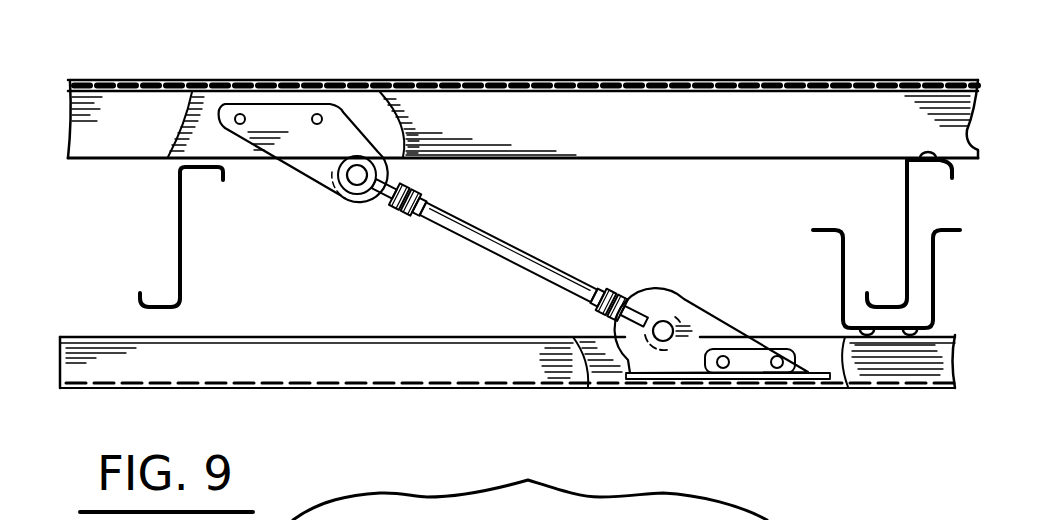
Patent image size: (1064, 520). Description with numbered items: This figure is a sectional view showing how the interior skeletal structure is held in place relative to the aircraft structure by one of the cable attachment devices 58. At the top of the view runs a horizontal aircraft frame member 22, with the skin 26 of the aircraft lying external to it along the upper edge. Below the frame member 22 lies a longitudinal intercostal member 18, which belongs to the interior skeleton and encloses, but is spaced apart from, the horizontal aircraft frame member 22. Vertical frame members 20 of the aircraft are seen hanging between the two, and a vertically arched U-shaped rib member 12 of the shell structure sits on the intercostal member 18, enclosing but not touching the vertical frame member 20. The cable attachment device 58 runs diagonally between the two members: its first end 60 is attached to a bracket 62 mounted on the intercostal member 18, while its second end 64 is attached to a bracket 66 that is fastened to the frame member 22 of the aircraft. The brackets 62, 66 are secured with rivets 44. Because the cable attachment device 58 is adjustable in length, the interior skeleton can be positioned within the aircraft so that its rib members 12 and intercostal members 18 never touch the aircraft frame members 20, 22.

The arched rib member 12 is at (937, 297).
The intercostal member 18 is at (328, 383).
The vertical frame member 20 is at (185, 247).
The horizontal aircraft frame member 22 is at (608, 158).
The skin 26 is at (573, 80).
The rivet 44 is at (242, 117).
The cable attachment device 58 is at (527, 236).
The first end 60 is at (657, 323).
The bracket 62 is at (727, 323).
The second end 64 is at (353, 180).
The bracket 66 is at (293, 115).